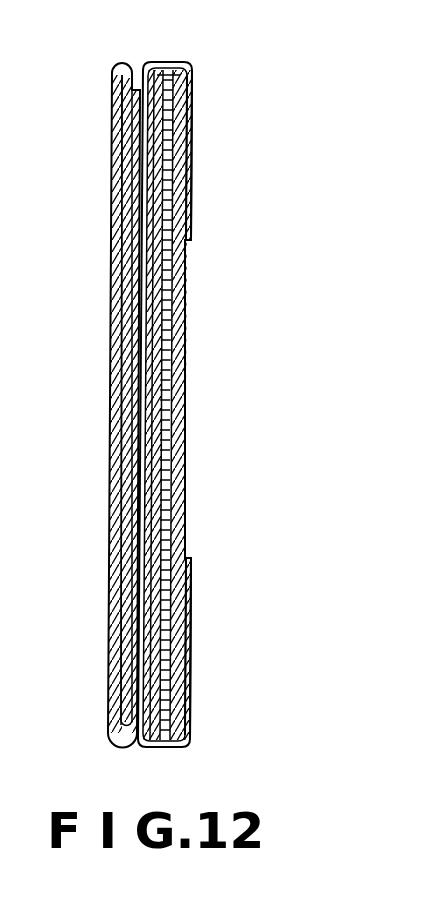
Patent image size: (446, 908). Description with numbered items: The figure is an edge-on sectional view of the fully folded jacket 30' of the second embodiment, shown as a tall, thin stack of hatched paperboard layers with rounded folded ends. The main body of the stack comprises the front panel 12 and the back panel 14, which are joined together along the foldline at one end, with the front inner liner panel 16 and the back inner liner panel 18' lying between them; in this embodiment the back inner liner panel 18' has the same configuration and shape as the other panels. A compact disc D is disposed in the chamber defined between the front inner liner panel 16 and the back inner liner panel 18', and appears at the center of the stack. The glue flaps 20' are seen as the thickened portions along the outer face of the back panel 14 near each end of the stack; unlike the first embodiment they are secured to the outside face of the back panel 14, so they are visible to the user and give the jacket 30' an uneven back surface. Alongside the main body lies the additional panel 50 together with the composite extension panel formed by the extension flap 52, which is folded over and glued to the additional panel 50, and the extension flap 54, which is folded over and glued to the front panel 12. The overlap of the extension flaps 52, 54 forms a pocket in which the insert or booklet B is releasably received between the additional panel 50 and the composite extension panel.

The front panel 12 is at (146, 304).
The back panel 14 is at (177, 527).
The front inner liner panel 16 is at (150, 378).
The back inner liner panel 18' is at (216, 405).
The glue flaps 20' is at (236, 404).
The fully folded jacket 30' is at (56, 662).
The additional panel 50 is at (118, 337).
The extension flap 52 is at (113, 438).
The extension flap 54 is at (134, 369).
The insert or booklet B is at (130, 504).
The compact disc D is at (175, 106).